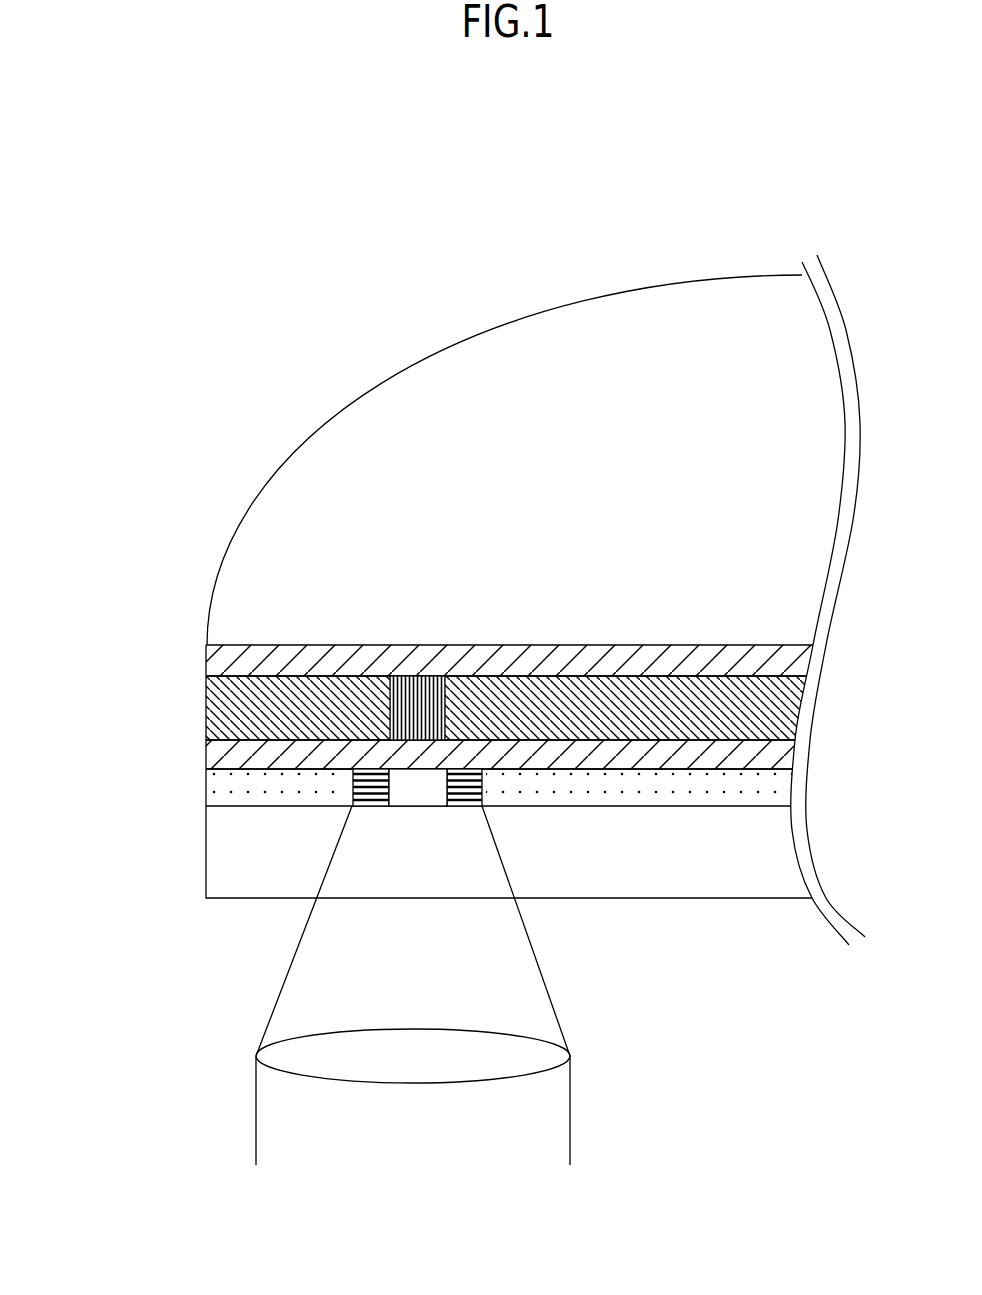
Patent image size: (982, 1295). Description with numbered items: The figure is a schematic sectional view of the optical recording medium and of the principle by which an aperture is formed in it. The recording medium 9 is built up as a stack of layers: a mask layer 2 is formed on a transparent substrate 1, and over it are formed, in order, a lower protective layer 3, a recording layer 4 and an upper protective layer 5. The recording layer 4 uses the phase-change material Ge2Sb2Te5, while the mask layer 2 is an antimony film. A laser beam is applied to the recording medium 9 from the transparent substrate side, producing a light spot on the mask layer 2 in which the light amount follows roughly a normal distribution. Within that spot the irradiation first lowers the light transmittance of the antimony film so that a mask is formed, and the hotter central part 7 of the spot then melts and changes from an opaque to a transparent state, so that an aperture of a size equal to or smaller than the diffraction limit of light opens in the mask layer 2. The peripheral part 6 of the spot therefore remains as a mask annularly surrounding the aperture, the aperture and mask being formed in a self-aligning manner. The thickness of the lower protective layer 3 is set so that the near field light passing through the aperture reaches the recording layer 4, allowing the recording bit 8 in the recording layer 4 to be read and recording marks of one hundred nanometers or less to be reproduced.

The transparent substrate 1 is at (222, 900).
The mask layer 2 is at (206, 791).
The lower protective layer 3 is at (206, 753).
The recording layer 4 is at (206, 700).
The upper protective layer 5 is at (206, 659).
The peripheral part 6 is at (463, 810).
The central part 7 is at (400, 806).
The recording bit 8 is at (413, 676).
The recording medium 9 is at (570, 1107).